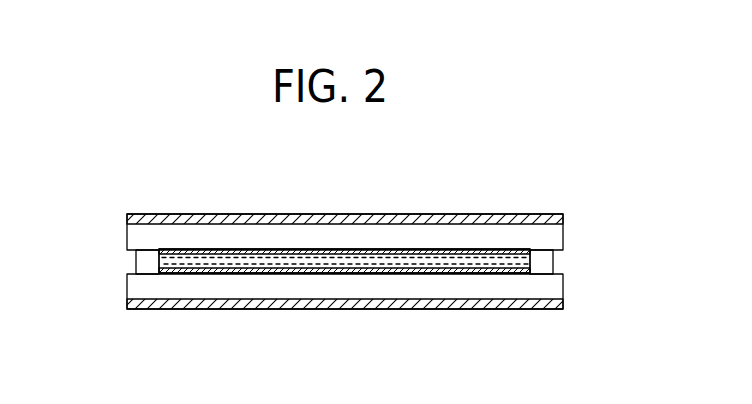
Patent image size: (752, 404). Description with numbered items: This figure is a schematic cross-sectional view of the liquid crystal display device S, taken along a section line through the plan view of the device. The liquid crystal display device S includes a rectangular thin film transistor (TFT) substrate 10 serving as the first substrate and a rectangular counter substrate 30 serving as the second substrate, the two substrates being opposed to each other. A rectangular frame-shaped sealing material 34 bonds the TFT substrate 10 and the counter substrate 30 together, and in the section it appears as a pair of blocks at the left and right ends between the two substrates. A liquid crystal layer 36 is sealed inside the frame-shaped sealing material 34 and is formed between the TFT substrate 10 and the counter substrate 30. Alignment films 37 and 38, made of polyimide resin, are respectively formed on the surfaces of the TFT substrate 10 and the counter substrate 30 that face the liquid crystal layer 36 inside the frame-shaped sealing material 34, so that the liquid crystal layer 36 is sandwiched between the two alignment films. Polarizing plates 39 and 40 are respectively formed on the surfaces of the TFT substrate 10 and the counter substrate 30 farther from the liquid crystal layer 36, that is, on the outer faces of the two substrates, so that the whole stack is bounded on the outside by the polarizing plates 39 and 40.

The liquid crystal display device S is at (120, 140).
The thin film transistor (TFT) substrate 10 is at (548, 289).
The counter substrate 30 is at (557, 234).
The sealing material 34 is at (143, 262).
The liquid crystal layer 36 is at (462, 270).
The alignment film 37 is at (195, 273).
The alignment film 38 is at (385, 250).
The polarizing plate 39 is at (345, 309).
The polarizing plate 40 is at (315, 214).